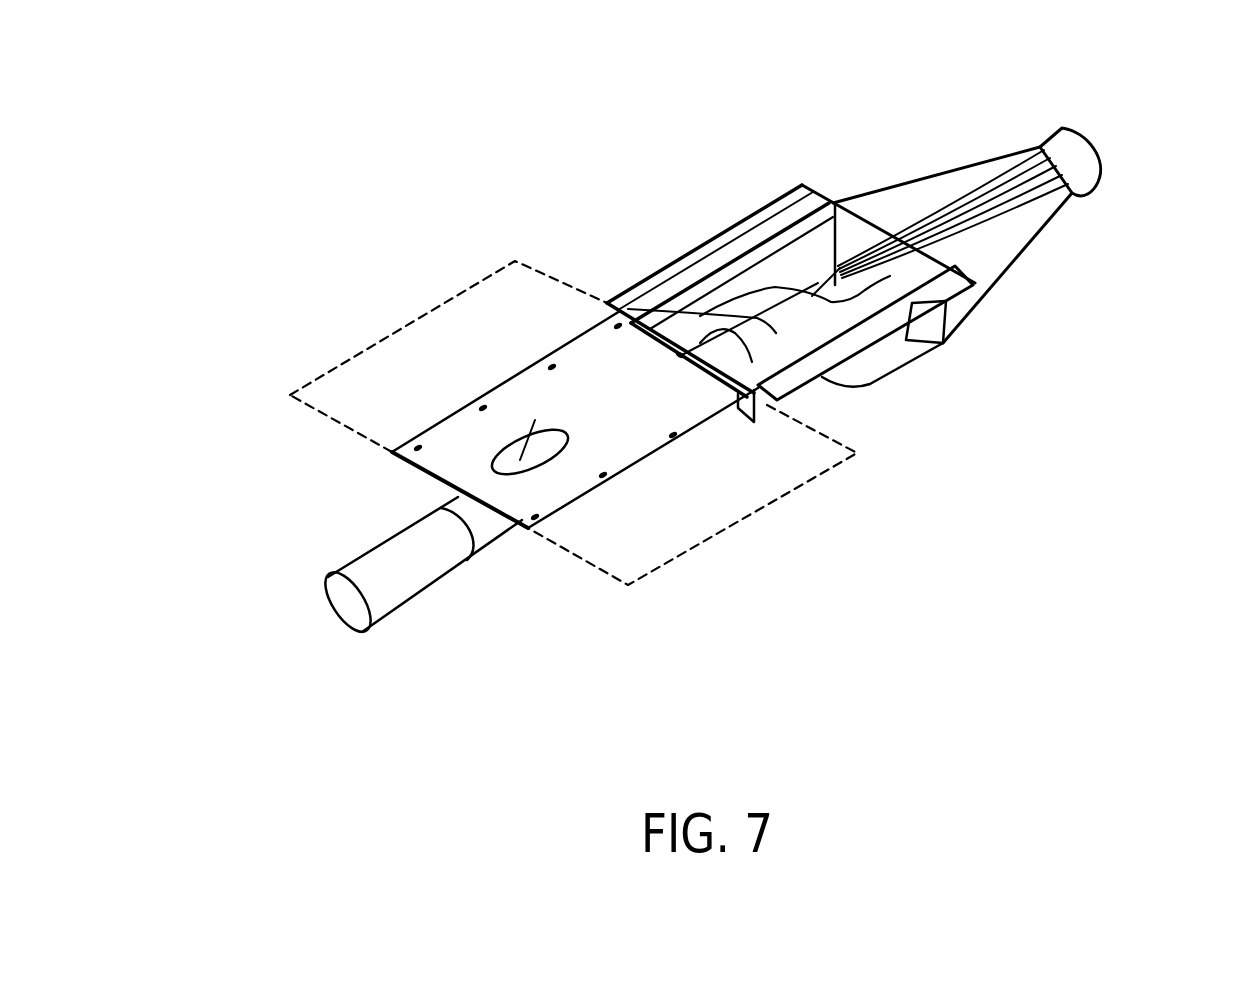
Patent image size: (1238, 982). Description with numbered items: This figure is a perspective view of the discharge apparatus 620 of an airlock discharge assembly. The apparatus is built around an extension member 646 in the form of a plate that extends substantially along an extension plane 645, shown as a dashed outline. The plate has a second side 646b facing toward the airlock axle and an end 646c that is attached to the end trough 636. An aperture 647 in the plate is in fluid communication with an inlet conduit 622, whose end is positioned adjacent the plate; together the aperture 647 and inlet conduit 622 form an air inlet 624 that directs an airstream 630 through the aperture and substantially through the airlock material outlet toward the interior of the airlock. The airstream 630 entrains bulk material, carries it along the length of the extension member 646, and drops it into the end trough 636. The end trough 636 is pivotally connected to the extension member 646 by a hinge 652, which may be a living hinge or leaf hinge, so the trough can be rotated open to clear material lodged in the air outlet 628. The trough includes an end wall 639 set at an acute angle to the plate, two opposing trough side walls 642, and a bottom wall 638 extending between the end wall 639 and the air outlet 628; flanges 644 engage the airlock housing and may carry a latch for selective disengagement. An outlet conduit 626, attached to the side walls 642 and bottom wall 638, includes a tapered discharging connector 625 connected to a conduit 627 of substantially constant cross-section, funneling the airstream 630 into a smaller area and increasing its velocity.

The discharge apparatus 620 is at (965, 370).
The inlet conduit 622 is at (420, 600).
The air inlet 624 is at (493, 452).
The tapered discharging connector 625 is at (992, 282).
The outlet conduit 626 is at (1045, 247).
The conduit 627 is at (1080, 196).
The air outlet 628 is at (916, 280).
The airstream 630 is at (315, 622).
The end trough 636 is at (876, 428).
The bottom wall 638 is at (805, 290).
The end wall 639 is at (700, 320).
The trough side wall 642 is at (841, 228).
The flanges 644 is at (636, 285).
The extension plane 645 is at (458, 305).
The extension member 646 is at (562, 506).
The second side 646b is at (622, 458).
The end 646c is at (655, 343).
The aperture 647 is at (561, 433).
The hinge 652 is at (774, 430).